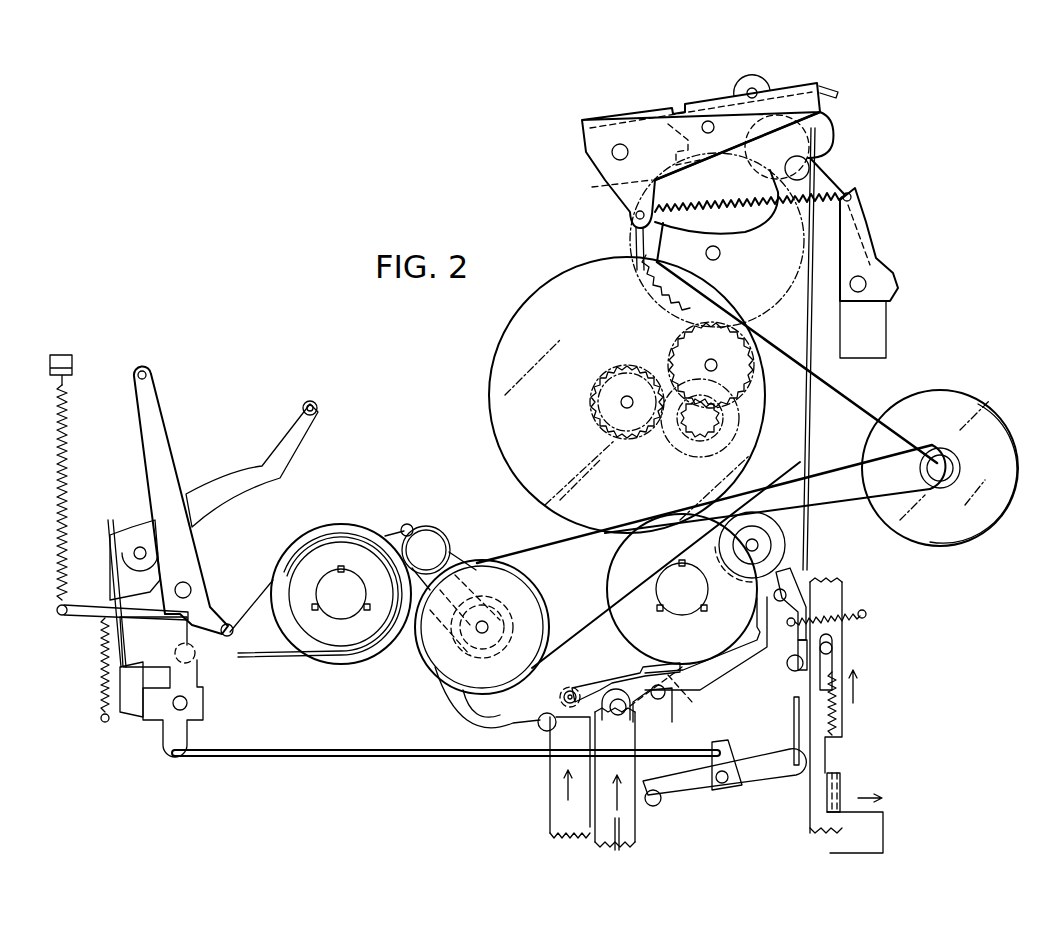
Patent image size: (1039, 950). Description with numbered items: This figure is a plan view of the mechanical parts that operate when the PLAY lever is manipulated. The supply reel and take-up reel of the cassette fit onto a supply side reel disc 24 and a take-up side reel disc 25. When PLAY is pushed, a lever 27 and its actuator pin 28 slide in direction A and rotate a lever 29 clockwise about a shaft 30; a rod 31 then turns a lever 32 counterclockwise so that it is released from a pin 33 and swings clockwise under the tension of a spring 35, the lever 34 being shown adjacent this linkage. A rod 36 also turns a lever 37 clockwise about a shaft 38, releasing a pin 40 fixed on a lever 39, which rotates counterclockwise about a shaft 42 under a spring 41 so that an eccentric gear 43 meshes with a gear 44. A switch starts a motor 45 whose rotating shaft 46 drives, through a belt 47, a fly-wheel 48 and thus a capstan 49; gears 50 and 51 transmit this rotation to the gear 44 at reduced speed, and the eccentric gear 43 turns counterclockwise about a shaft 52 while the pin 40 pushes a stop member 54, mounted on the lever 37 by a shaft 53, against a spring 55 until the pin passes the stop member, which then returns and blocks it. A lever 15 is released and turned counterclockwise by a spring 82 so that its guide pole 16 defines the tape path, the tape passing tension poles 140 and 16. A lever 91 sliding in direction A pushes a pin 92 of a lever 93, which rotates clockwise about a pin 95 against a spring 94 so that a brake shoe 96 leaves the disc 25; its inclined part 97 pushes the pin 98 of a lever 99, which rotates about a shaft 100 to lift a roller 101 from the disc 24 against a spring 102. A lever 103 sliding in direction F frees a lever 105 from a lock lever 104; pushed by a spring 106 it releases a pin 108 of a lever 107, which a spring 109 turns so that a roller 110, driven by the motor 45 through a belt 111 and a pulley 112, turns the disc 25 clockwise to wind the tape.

The lever 15 is at (240, 468).
The guide pole 16 is at (318, 412).
The supply side reel disc 24 is at (330, 526).
The take-up side reel disc 25 is at (614, 580).
The lever 27 is at (642, 808).
The actuator pin 28 is at (663, 800).
The lever 29 is at (778, 780).
The shaft 30 is at (724, 786).
The rod 31 is at (386, 760).
The lever 32 is at (204, 720).
The pin 33 is at (180, 650).
The lever 34 is at (206, 566).
The spring 35 is at (70, 436).
The rod 36 is at (812, 424).
The lever 37 is at (588, 122).
The shaft 38 is at (612, 150).
The lever 39 is at (852, 192).
The pin 40 is at (810, 164).
The spring 41 is at (710, 207).
The shaft 42 is at (868, 281).
The eccentric gear 43 is at (634, 232).
The gear 44 is at (688, 356).
The motor 45 is at (946, 540).
The rotating shaft 46 is at (943, 454).
The belt 47 is at (874, 404).
The fly-wheel 48 is at (500, 453).
The capstan 49 is at (622, 396).
The gear 50 is at (626, 435).
The gear 51 is at (690, 442).
The shaft 52 is at (720, 253).
The shaft 53 is at (704, 118).
The stop member 54 is at (840, 93).
The spring 55 is at (670, 128).
The spring 82 is at (102, 684).
The lever 91 is at (550, 798).
The pin 92 is at (570, 688).
The lever 93 is at (622, 676).
The spring 94 is at (684, 702).
The pin 95 is at (658, 702).
The brake shoe 96 is at (728, 641).
The inclined part 97 is at (547, 738).
The roller 98 is at (540, 716).
The lever 99 is at (440, 714).
The shaft 100 is at (490, 622).
The roller 101 is at (429, 528).
The spring 102 is at (380, 534).
The lever 103 is at (885, 832).
The lock lever 104 is at (842, 780).
The lever 105 is at (834, 660).
The spring 106 is at (840, 732).
The lever 107 is at (788, 660).
The pin 108 is at (792, 720).
The spring 109 is at (864, 621).
The roller 110 is at (758, 545).
The belt 111 is at (838, 480).
The pulley 112 is at (770, 562).
The tension pole 140 is at (148, 371).